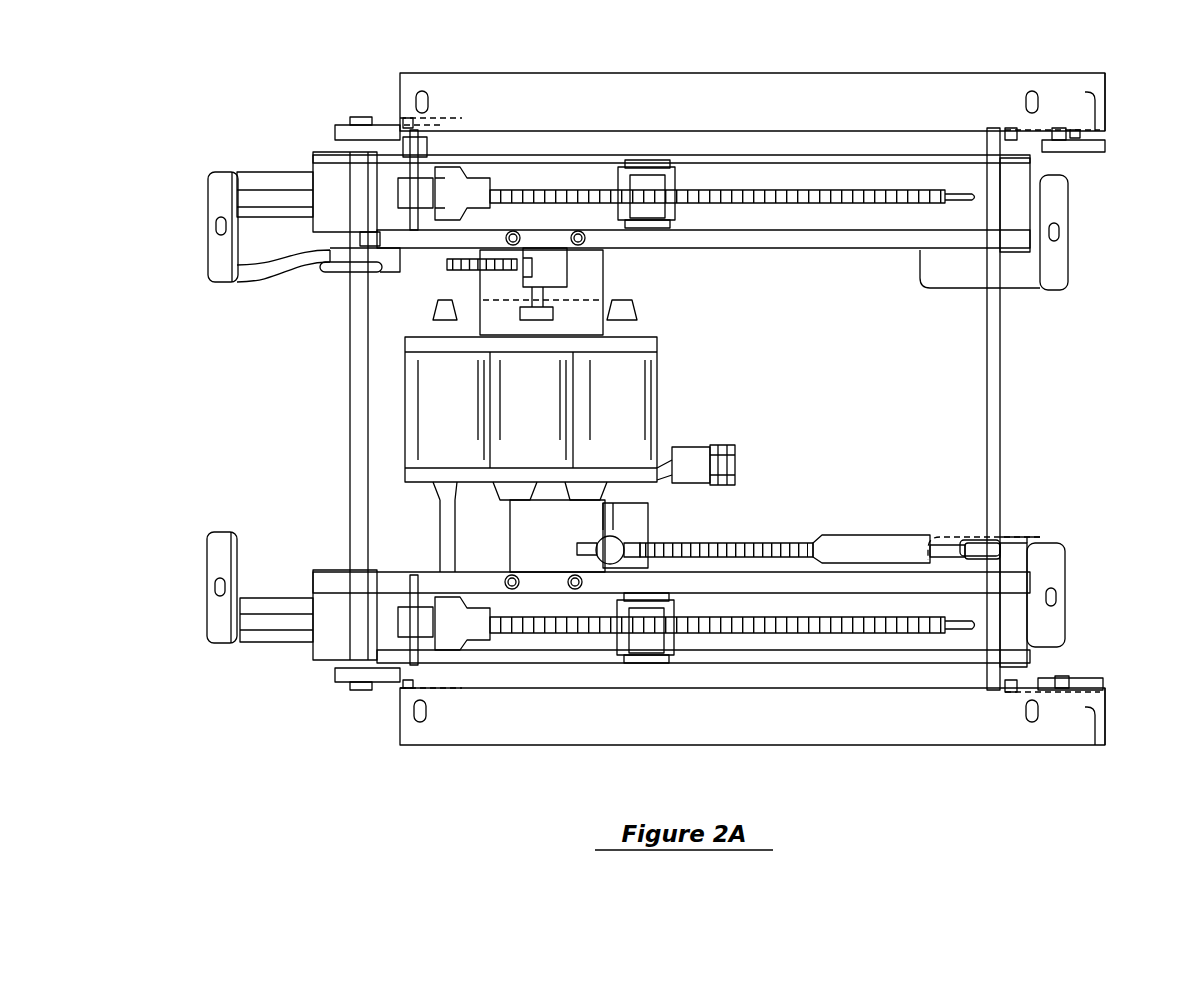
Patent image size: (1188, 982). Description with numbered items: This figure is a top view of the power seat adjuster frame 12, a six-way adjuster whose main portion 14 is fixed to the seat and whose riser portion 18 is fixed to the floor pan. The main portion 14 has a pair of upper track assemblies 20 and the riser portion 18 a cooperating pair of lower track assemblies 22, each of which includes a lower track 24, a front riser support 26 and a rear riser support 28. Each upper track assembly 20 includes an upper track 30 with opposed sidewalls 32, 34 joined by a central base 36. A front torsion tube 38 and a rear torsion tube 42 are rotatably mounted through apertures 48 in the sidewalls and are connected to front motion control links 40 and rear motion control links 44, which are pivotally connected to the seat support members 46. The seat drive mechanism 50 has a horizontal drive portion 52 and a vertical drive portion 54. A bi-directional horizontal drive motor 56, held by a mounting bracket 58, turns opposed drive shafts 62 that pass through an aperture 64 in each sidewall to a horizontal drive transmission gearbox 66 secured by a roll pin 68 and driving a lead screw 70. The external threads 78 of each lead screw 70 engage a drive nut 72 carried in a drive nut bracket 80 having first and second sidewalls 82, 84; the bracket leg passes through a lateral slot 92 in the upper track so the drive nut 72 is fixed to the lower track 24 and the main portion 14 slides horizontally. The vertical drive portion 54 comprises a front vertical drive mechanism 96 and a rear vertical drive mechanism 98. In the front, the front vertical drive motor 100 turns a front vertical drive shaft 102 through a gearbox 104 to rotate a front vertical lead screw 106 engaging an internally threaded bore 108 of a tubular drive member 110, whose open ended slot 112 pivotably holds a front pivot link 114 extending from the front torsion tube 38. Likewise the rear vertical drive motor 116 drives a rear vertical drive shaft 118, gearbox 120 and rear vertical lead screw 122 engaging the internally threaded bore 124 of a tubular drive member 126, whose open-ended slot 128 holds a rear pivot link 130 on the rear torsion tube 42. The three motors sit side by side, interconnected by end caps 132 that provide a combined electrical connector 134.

The power seat adjuster frame 12 is at (1137, 373).
The main portion 14 is at (218, 402).
The riser portion 18 is at (245, 452).
The upper track assemblies 20 is at (260, 515).
The lower track assemblies 22 is at (282, 107).
The lower track 24 is at (265, 172).
The front riser support 26 is at (215, 187).
The rear riser support 28 is at (965, 290).
The upper track 30 is at (1040, 165).
The sidewall 32 is at (1020, 245).
The sidewall 34 is at (1005, 130).
The central base 36 is at (1020, 215).
The front torsion tube 38 is at (350, 348).
The front motion control links 40 is at (400, 118).
The rear torsion tube 42 is at (1000, 325).
The rear motion control links 44 is at (1105, 100).
The seat support members 46 is at (832, 90).
The apertures 48 is at (375, 125).
The seat drive mechanism 50 is at (1107, 423).
The horizontal drive portion 52 is at (797, 360).
The vertical drive portion 54 is at (858, 405).
The horizontal drive motor 56 is at (370, 378).
The mounting bracket 58 is at (603, 300).
The drive shafts 62 is at (400, 310).
The aperture 64 is at (475, 175).
The horizontal drive transmission gearbox 66 is at (440, 167).
The roll pin 68 is at (335, 158).
The lead screw 70 is at (748, 190).
The drive nut 72 is at (625, 167).
The external threads 78 is at (830, 203).
The drive nut bracket 80 is at (645, 175).
The first sidewall 82 is at (665, 170).
The second sidewall 84 is at (720, 248).
The lateral slot 92 is at (972, 195).
The front vertical drive mechanism 96 is at (198, 372).
The rear vertical drive mechanism 98 is at (878, 450).
The front vertical drive motor 100 is at (560, 385).
The front vertical drive shaft 102 is at (520, 320).
The gearbox 104 is at (560, 280).
The front vertical lead screw 106 is at (470, 320).
The internally threaded bore 108 is at (348, 290).
The tubular drive member 110 is at (275, 262).
The open ended slot 112 is at (300, 262).
The front pivot link 114 is at (360, 240).
The rear vertical drive motor 116 is at (620, 418).
The rear vertical drive shaft 118 is at (640, 508).
The gearbox 120 is at (610, 570).
The rear vertical lead screw 122 is at (790, 542).
The internally threaded bore 124 is at (820, 535).
The tubular drive member 126 is at (925, 545).
The open-ended slot 128 is at (965, 543).
The rear pivot link 130 is at (1008, 540).
The end caps 132 is at (660, 342).
The combined electrical connector 134 is at (735, 465).